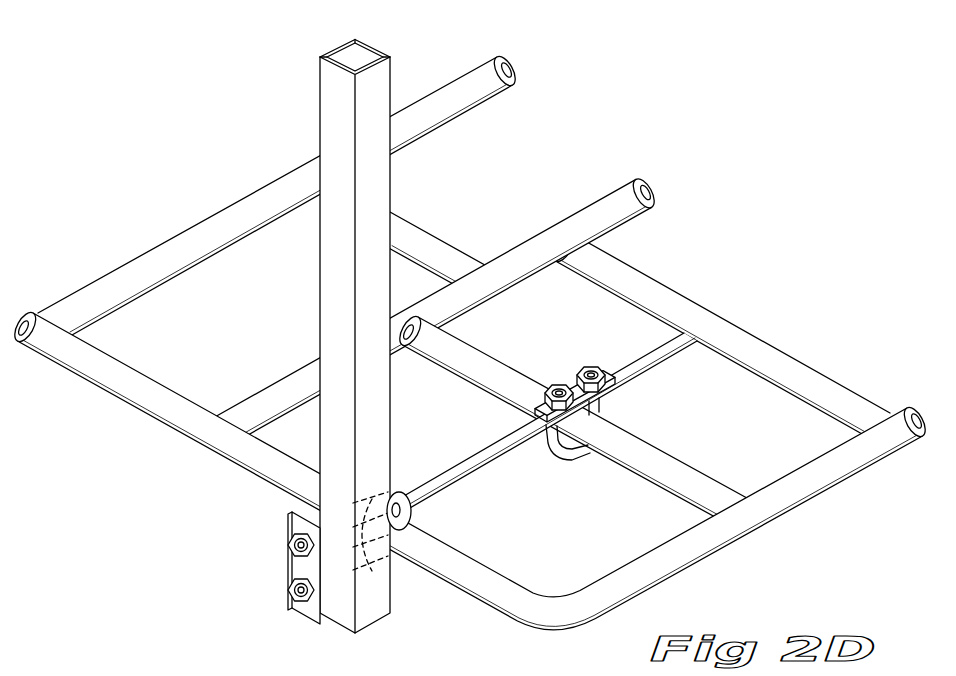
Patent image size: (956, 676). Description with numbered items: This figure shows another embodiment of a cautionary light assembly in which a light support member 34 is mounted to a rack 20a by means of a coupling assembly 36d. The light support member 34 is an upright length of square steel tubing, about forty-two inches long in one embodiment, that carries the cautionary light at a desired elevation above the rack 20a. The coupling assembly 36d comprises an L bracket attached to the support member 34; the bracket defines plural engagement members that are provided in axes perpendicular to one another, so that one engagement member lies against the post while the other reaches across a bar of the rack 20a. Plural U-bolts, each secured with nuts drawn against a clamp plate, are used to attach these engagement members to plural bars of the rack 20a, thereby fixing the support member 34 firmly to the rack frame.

The light support member 34 is at (340, 126).
The coupling assembly 36d is at (411, 384).
The rack 20a is at (210, 430).